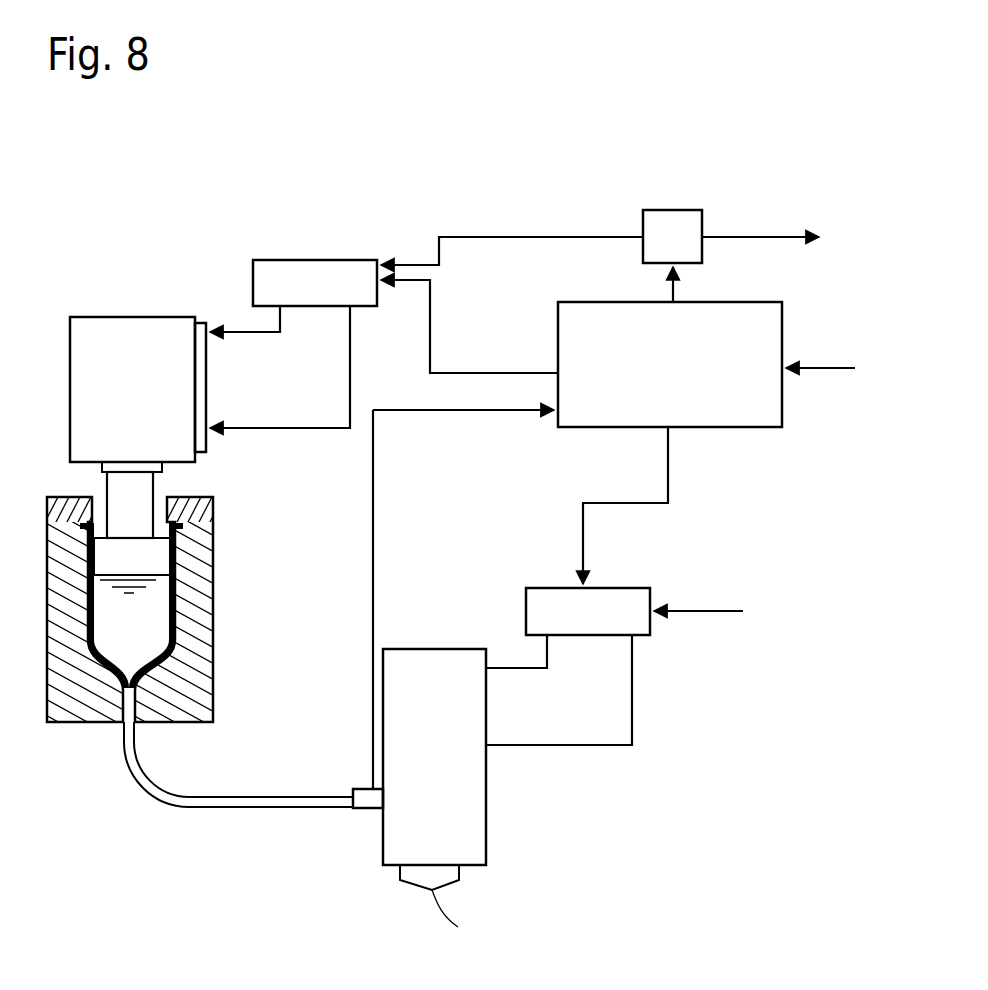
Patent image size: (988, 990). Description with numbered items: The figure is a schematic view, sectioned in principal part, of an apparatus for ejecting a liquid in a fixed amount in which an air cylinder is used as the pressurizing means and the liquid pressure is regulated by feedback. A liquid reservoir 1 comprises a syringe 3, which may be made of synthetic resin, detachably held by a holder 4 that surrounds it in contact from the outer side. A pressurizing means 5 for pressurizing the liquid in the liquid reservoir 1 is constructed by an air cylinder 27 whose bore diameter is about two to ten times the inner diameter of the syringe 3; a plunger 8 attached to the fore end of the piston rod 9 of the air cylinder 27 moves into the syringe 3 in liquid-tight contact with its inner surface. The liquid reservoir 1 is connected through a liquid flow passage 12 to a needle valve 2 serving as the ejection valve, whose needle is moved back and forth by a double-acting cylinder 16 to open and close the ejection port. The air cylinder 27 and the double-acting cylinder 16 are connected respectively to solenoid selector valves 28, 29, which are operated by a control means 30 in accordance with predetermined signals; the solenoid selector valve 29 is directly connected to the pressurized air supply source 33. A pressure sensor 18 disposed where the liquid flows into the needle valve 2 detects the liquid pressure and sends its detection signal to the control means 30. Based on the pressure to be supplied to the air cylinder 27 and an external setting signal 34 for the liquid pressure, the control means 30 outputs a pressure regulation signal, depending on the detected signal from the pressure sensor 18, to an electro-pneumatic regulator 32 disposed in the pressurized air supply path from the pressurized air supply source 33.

The liquid reservoir 1 is at (168, 609).
The needle valve 2 is at (487, 830).
The syringe 3 is at (203, 642).
The holder 4 is at (83, 710).
The pressurizing means 5 is at (113, 358).
The plunger 8 is at (148, 553).
The piston rod 9 is at (163, 490).
The liquid flow passage 12 is at (247, 797).
The double-acting cylinder 16 is at (473, 727).
The pressure sensor 18 is at (367, 807).
The air cylinder 27 is at (82, 408).
The solenoid selector valve 28 is at (318, 272).
The solenoid selector valve 29 is at (551, 600).
The control means 30 is at (767, 413).
The electro-pneumatic regulator 32 is at (648, 220).
The pressurized air supply source 33 is at (817, 230).
The external setting signal 34 is at (823, 363).